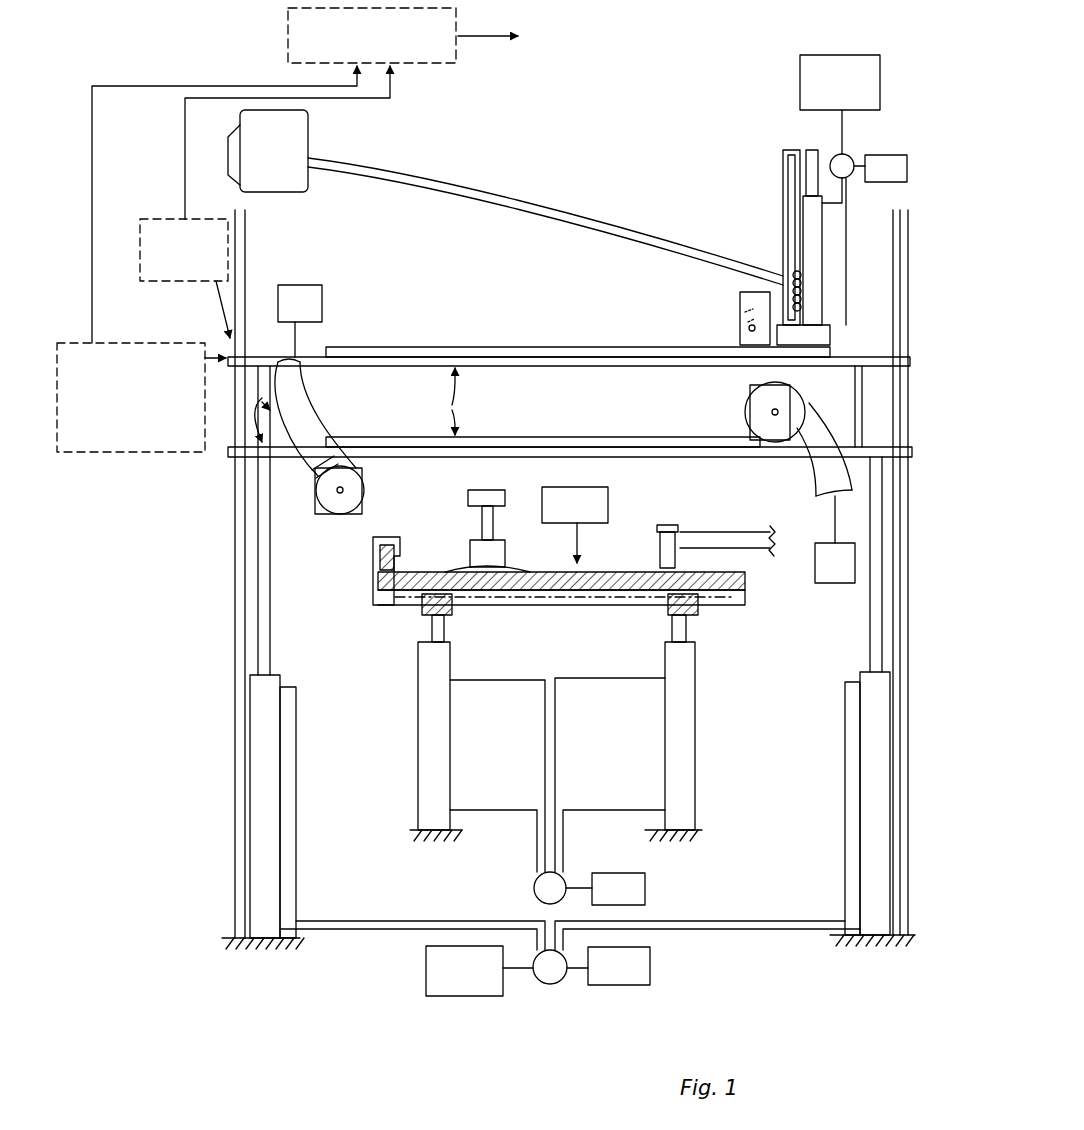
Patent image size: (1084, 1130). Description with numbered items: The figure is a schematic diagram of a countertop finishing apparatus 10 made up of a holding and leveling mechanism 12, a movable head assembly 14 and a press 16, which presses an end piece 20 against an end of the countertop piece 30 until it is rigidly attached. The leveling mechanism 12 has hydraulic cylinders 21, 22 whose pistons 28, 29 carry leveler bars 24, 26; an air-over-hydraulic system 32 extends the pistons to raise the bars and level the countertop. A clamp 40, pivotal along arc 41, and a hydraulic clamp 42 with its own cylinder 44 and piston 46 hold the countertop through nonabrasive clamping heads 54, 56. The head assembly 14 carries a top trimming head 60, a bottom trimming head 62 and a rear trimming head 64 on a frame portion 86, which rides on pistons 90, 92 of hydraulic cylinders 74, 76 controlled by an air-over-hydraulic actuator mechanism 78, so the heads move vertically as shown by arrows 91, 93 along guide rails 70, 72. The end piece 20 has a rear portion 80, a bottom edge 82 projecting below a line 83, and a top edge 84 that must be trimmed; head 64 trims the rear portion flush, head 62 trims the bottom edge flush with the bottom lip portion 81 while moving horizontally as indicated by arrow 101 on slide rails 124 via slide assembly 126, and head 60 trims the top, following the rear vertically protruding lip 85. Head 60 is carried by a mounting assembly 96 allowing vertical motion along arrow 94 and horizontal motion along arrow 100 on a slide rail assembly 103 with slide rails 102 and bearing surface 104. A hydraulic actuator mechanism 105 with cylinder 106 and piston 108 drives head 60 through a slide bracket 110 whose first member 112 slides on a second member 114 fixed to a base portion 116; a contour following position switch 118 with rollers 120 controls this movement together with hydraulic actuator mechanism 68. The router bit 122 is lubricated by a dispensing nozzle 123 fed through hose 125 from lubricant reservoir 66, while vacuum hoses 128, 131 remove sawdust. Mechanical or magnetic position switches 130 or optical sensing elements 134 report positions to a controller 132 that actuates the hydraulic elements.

The countertop finishing apparatus 10 is at (164, 144).
The holding and leveling mechanism 12 is at (408, 638).
The movable head assembly 14 is at (226, 540).
The press 16 is at (565, 487).
The end piece 20 is at (748, 590).
The hydraulic cylinder 21 is at (440, 746).
The hydraulic cylinder 22 is at (668, 742).
The leveler bar 24 is at (452, 602).
The leveler bar 26 is at (690, 613).
The piston 28 is at (440, 630).
The piston 29 is at (674, 630).
The countertop piece 30 is at (590, 583).
The air-over-hydraulic system 32 is at (662, 887).
The clamp 40 is at (713, 540).
The arc 41 is at (722, 490).
The hydraulic clamp 42 is at (470, 538).
The hydraulic cylinder 44 is at (488, 492).
The piston 46 is at (494, 526).
The clamping head 54 is at (660, 566).
The clamping head 56 is at (500, 571).
The top trimming head 60 is at (775, 292).
The bottom trimming head 62 is at (806, 410).
The rear trimming head 64 is at (340, 514).
The lubricant reservoir and delivery system 66 is at (312, 126).
The hydraulic actuator mechanism 68 is at (860, 126).
The guide rail 70 is at (232, 455).
The guide rail 72 is at (908, 375).
The hydraulic cylinder 74 is at (265, 755).
The hydraulic cylinder 76 is at (875, 700).
The air-over-hydraulic actuator mechanism 78 is at (560, 990).
The rear portion 80 is at (378, 560).
The bottom lip portion 81 is at (745, 600).
The bottom edge 82 is at (385, 606).
The line 83 is at (500, 600).
The top edge 84 is at (405, 571).
The rear vertically protruding lip 85 is at (380, 540).
The frame portion 86 is at (350, 405).
The piston 90 is at (270, 615).
The arrow 91 is at (264, 482).
The piston 92 is at (876, 572).
The arrow 93 is at (873, 530).
The arrow 94 is at (733, 250).
The mounting assembly 96 is at (826, 252).
The arrow 100 is at (738, 330).
The arrow 101 is at (758, 437).
The slide rails 102 is at (505, 347).
The slide rail assembly 103 is at (834, 334).
The bearing surface 104 is at (757, 350).
The hydraulic actuator mechanism 105 is at (853, 154).
The hydraulic cylinder 106 is at (810, 224).
The piston 108 is at (826, 170).
The slide bracket 110 is at (786, 150).
The first member 112 is at (785, 176).
The second member 114 is at (790, 190).
The base portion 116 is at (822, 328).
The contour following position switch 118 is at (782, 305).
The rollers 120 is at (775, 348).
The router bit 122 is at (744, 332).
The lubricant dispensing nozzle 123 is at (790, 300).
The slide rails 124 is at (490, 437).
The hose 125 is at (392, 186).
The slide assembly 126 is at (770, 449).
The vacuum hose 128 is at (320, 397).
The mechanical or magnetic position switches 130 is at (120, 452).
The vacuum hose 131 is at (812, 470).
The controller 132 is at (455, 65).
The optical sensing elements 134 is at (160, 220).